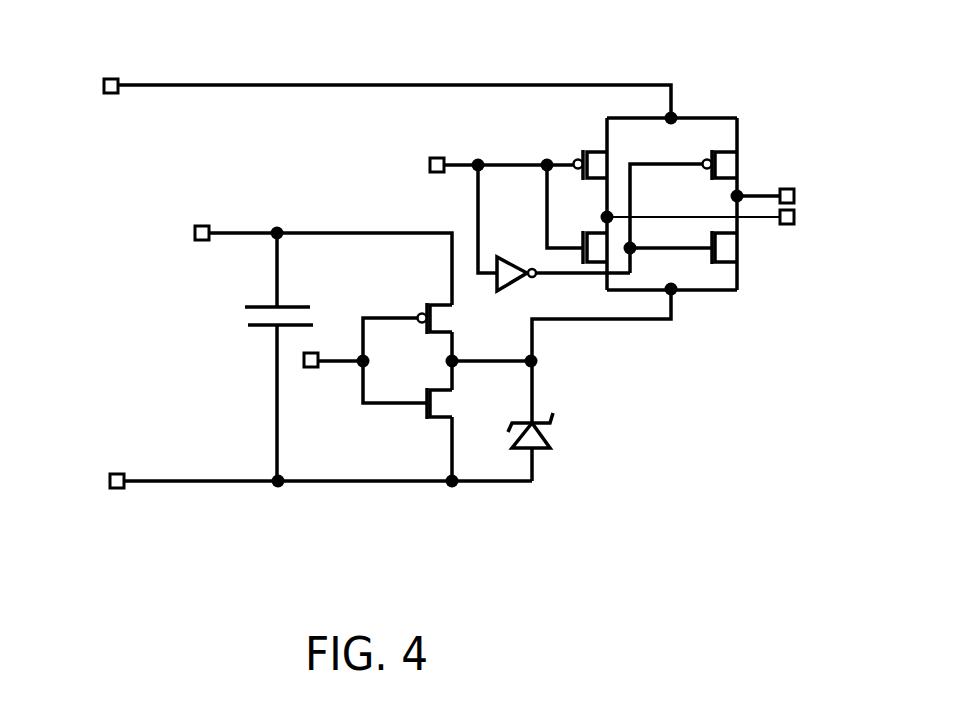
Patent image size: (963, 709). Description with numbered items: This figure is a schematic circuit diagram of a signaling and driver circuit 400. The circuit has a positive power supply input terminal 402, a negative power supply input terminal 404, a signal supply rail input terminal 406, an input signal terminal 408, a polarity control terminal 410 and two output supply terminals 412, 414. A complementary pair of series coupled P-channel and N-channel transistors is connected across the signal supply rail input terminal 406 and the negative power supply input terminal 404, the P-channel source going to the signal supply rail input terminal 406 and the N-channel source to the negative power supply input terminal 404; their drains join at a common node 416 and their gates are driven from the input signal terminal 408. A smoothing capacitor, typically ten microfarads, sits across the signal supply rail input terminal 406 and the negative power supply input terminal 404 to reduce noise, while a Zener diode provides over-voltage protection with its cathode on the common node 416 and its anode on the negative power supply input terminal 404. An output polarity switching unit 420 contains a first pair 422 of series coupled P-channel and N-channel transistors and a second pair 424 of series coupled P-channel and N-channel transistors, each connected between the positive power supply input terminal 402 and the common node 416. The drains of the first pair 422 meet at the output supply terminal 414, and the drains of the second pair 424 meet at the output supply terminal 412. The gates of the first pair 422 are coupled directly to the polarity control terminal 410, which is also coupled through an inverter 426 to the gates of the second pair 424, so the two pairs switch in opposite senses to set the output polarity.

The signaling and driver circuit 400 is at (253, 566).
The positive power supply input terminal 402 is at (104, 82).
The negative power supply input terminal 404 is at (108, 476).
The signal supply rail input terminal 406 is at (196, 228).
The input signal terminal 408 is at (308, 363).
The polarity control terminal 410 is at (432, 163).
The output supply terminal 412 is at (792, 190).
The output supply terminal 414 is at (792, 223).
The common node 416 is at (455, 357).
The output polarity switching unit 420 is at (480, 116).
The first pair of series coupled P-channel and N-channel transistors 422 is at (567, 100).
The second pair of series coupled P-channel and N-channel transistors 424 is at (734, 102).
The inverter 426 is at (503, 268).